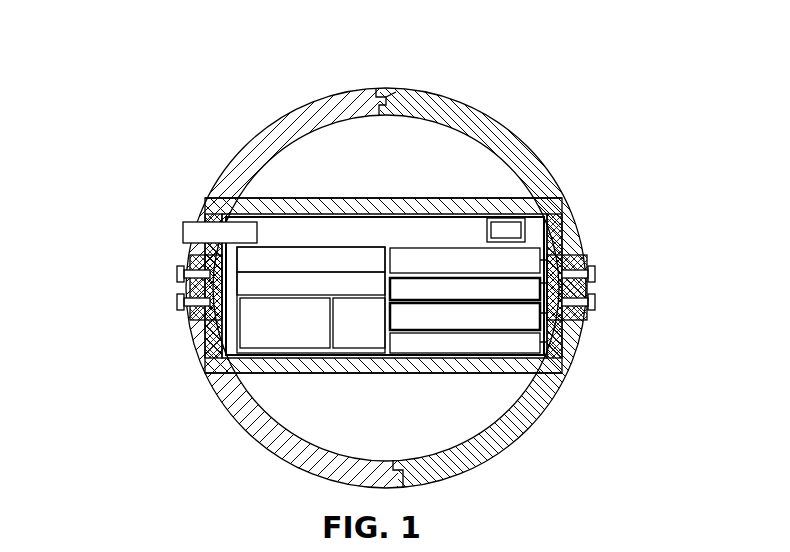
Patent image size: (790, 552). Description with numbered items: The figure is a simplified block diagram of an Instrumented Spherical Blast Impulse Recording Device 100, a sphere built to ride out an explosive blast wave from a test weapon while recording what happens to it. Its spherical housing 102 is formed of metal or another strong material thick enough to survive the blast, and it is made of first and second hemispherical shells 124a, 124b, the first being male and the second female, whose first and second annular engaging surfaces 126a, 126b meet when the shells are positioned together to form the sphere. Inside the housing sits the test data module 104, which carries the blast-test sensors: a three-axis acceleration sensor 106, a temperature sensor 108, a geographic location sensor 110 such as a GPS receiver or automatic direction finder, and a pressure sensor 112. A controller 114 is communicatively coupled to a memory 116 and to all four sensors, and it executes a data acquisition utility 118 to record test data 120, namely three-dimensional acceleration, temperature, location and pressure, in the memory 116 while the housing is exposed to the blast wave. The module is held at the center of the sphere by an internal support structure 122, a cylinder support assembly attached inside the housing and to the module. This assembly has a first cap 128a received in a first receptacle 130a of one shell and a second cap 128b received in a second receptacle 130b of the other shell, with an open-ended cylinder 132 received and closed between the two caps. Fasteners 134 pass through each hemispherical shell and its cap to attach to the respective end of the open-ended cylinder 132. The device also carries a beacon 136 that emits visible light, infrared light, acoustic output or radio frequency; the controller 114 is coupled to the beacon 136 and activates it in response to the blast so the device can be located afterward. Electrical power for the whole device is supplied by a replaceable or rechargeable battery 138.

The Instrumented Spherical Blast Impulse Recording Device 100 is at (216, 157).
The spherical housing 102 is at (505, 120).
The test data module 104 is at (376, 221).
The three-axis acceleration sensor 106 is at (575, 220).
The temperature sensor 108 is at (465, 290).
The geographic location sensor 110 is at (465, 317).
The pressure sensor 112 is at (567, 350).
The controller 114 is at (311, 260).
The memory 116 is at (311, 284).
The data acquisition utility 118 is at (285, 323).
The test data 120 is at (359, 323).
The internal support structure 122 is at (453, 373).
The first hemispherical shell 124a is at (240, 425).
The second hemispherical shell 124b is at (555, 398).
The first annular engaging surface 126a is at (432, 92).
The second annular engaging surface 126b is at (372, 88).
The first cap 128a is at (190, 268).
The second cap 128b is at (592, 250).
The first receptacle 130a is at (197, 318).
The second receptacle 130b is at (572, 235).
The open-ended cylinder 132 is at (323, 198).
The fasteners 134 is at (180, 302).
The beacon 136 is at (186, 222).
The battery 138 is at (508, 216).